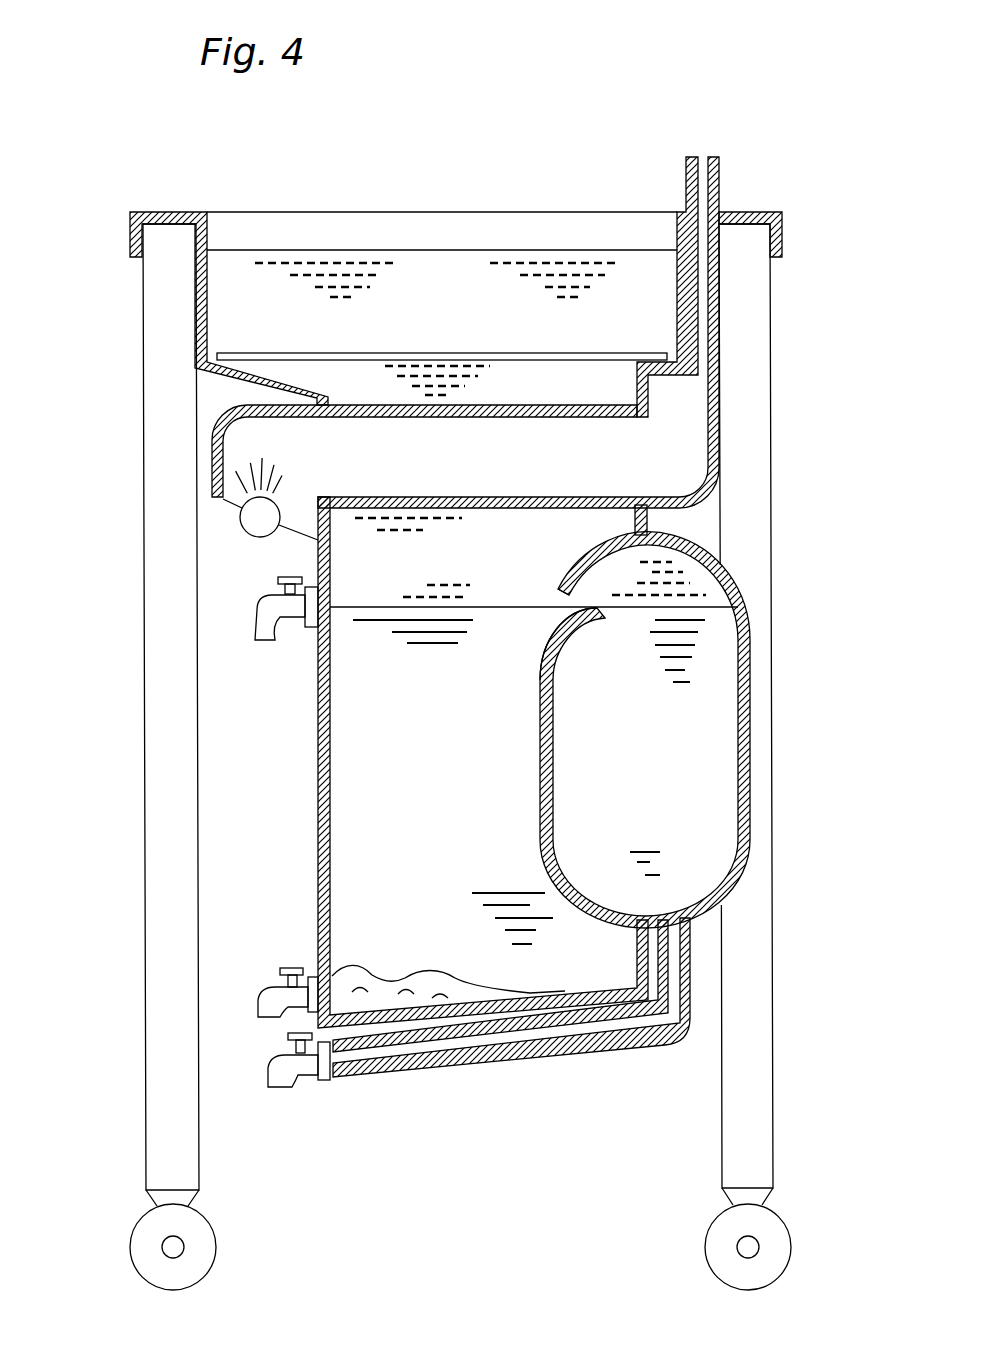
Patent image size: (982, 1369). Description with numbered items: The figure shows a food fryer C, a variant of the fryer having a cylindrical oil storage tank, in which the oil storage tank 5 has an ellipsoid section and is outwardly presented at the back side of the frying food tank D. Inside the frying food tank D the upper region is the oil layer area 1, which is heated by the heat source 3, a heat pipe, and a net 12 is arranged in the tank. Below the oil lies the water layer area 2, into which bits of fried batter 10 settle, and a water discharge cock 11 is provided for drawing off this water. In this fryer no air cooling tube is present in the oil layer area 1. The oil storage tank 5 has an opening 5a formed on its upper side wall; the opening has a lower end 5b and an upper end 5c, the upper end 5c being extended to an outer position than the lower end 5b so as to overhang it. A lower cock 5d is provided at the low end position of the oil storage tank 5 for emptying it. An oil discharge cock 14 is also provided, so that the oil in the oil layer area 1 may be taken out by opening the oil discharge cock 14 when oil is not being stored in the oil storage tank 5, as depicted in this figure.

The food fryer C is at (789, 141).
The frying food tank D is at (402, 243).
The oil layer area 1 is at (250, 297).
The net 12 is at (260, 352).
The heat source 3 is at (253, 443).
The water layer area 2 is at (360, 796).
The oil discharge cock 14 is at (268, 612).
The water discharge cock 11 is at (268, 987).
The bit of fried batter 10 is at (405, 987).
The cylindrical oil storage tank 5 is at (750, 845).
The opening 5a is at (583, 592).
The lower end of the opening 5b is at (607, 612).
The upper end of the opening 5c is at (563, 583).
The lower cock 5d is at (305, 1083).